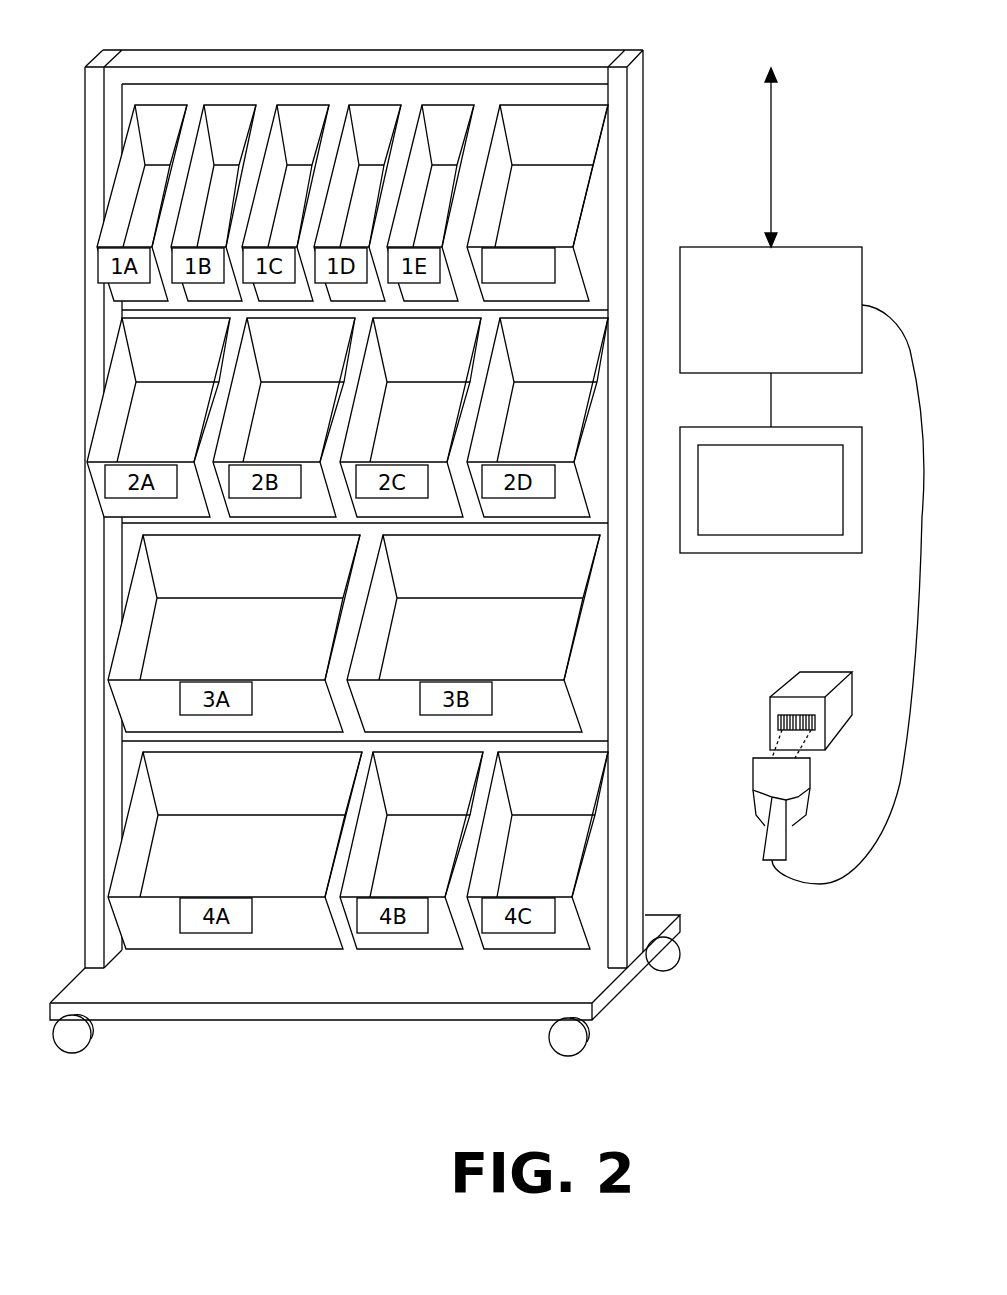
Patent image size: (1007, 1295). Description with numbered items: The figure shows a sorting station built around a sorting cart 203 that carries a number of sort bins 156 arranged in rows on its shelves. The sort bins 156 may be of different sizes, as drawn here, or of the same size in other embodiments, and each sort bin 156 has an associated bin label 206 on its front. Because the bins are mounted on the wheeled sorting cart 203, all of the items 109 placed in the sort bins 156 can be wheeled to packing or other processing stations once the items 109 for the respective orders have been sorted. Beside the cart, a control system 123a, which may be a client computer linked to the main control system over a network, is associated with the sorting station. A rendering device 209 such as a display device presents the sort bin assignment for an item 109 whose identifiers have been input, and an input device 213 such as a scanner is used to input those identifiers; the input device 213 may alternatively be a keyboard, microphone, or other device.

The sorting cart 203 is at (380, 987).
The sort bins 156 is at (557, 130).
The bin label 206 is at (548, 262).
The control system 123a is at (771, 310).
The rendering device 209 is at (768, 553).
The item 109 is at (805, 685).
The input device 213 is at (768, 782).